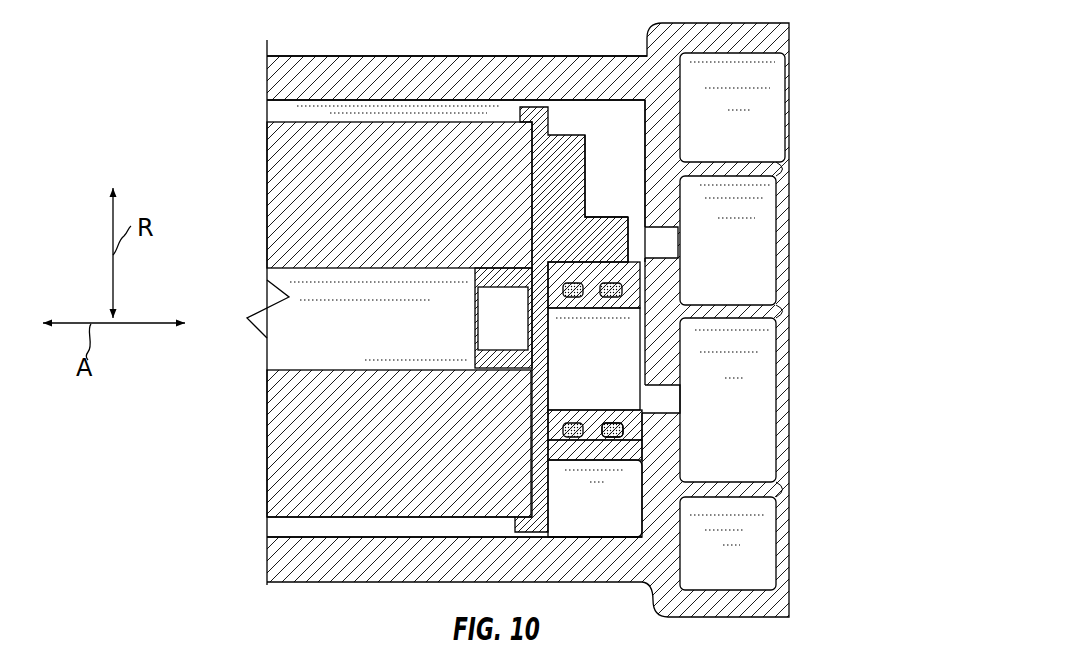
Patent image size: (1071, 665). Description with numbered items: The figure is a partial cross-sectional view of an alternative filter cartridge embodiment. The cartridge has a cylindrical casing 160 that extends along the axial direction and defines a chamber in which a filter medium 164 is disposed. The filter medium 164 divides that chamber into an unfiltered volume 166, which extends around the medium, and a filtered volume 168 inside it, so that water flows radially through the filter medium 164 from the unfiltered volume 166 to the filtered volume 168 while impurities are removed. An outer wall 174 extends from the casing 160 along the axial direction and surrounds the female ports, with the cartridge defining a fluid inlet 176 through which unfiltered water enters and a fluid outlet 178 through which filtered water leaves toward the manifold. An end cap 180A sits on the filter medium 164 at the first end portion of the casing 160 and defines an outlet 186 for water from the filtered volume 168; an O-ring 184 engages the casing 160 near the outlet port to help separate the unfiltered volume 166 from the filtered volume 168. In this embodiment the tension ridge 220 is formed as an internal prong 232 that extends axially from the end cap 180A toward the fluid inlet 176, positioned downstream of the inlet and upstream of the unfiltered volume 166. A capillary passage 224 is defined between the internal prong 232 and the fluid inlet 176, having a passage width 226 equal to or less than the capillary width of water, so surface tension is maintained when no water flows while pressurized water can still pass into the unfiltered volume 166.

The casing 160 is at (590, 85).
The outer wall 174 is at (517, 65).
The fluid inlet 176 is at (668, 235).
The fluid outlet 178 is at (658, 405).
The filter medium 164 is at (285, 478).
The unfiltered volume 166 is at (312, 525).
The filtered volume 168 is at (282, 350).
The outlet 186 is at (543, 337).
The internal prong 232 is at (630, 262).
The tension ridge 220 is at (607, 210).
The passage width 226 is at (628, 252).
The capillary passage 224 is at (607, 286).
The O-ring 184 is at (612, 437).
The end cap 180A is at (550, 485).